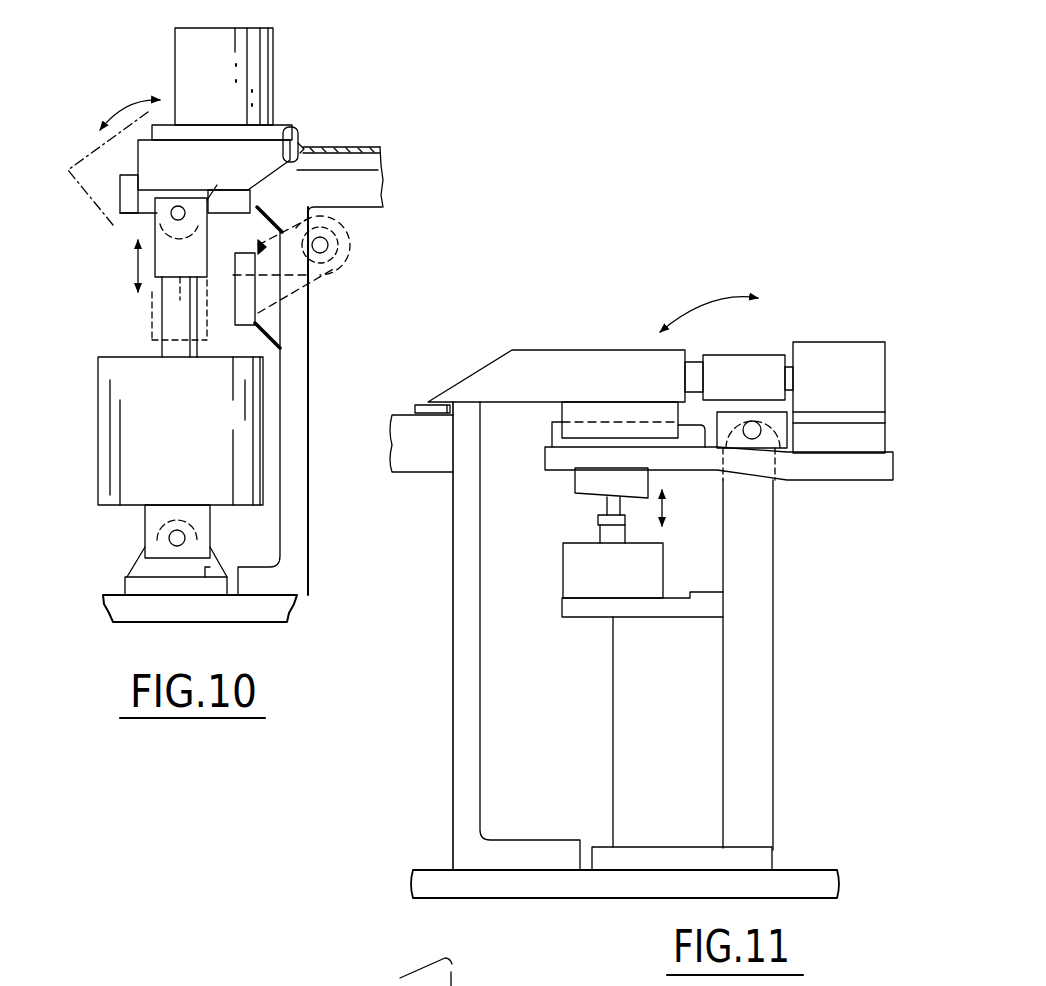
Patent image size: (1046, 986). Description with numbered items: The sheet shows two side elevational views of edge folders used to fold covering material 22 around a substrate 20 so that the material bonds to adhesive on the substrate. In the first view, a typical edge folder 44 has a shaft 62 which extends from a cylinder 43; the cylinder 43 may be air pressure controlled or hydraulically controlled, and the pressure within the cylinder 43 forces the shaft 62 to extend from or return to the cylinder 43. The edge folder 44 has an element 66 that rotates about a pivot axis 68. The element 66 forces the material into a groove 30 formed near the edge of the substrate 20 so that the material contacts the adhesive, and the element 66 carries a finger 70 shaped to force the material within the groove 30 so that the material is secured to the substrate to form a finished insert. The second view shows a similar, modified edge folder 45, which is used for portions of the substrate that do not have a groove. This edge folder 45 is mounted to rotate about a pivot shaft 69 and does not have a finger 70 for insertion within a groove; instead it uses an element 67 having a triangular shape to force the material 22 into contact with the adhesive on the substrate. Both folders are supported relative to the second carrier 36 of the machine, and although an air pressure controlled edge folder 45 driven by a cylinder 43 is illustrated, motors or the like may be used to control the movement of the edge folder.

In FIG. 10, the substrate 20 is at (380, 147).
In FIG. 11, the substrate 20 is at (417, 407).
In FIG. 10, the material 22 is at (310, 147).
In FIG. 11, the material 22 is at (420, 403).
In FIG. 10, the groove 30 is at (307, 147).
In FIG. 10, the second carrier 36 is at (310, 320).
In FIG. 11, the second carrier 36 is at (452, 625).
In FIG. 10, the cylinder 43 is at (273, 33).
In FIG. 11, the cylinder 43 is at (885, 360).
In FIG. 10, the edge folder 44 is at (120, 162).
In FIG. 11, the edge folder 45 is at (788, 328).
In FIG. 10, the shaft 62 is at (160, 316).
In FIG. 10, the element 66 is at (293, 127).
In FIG. 11, the element 67 is at (495, 357).
In FIG. 10, the pivot axis 68 is at (178, 206).
In FIG. 11, the pivot shaft 69 is at (749, 422).
In FIG. 10, the finger 70 is at (307, 143).